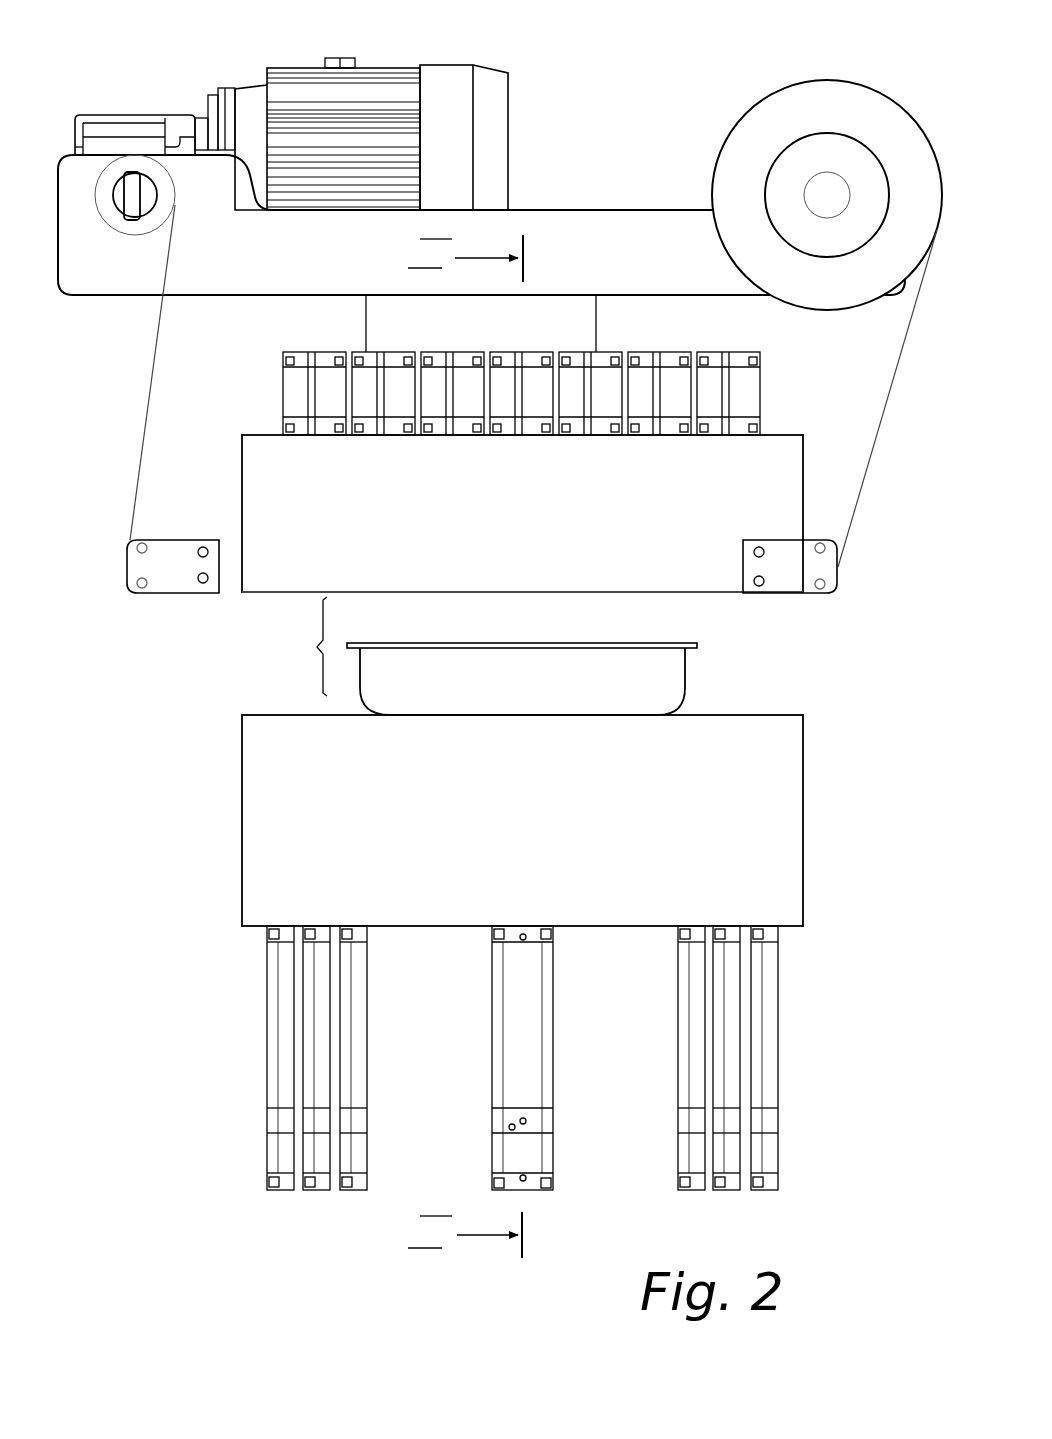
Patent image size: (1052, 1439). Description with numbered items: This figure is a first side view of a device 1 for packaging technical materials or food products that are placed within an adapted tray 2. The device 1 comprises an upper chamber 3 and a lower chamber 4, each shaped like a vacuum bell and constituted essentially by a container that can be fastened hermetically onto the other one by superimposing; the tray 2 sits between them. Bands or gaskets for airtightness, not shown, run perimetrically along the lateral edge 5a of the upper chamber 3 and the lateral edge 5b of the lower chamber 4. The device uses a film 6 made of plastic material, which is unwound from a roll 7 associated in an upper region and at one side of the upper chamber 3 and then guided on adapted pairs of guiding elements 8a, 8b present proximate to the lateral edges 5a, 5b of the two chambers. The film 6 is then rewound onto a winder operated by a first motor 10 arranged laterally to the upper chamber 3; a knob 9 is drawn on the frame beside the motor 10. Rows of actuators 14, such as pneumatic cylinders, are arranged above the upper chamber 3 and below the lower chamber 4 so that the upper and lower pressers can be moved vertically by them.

The device 1 is at (138, 793).
The tray 2 is at (700, 696).
The upper chamber 3 is at (276, 493).
The lower chamber 4 is at (818, 844).
The lateral edge 5a is at (246, 598).
The lateral edge 5b is at (805, 716).
The film 6 is at (152, 367).
The drive wheel 7 is at (871, 113).
The guiding elements 8a is at (818, 567).
The guiding elements 8b is at (145, 567).
The adjustment knob 9 is at (122, 175).
The first motor 10 is at (386, 64).
The actuators 14 is at (307, 351).